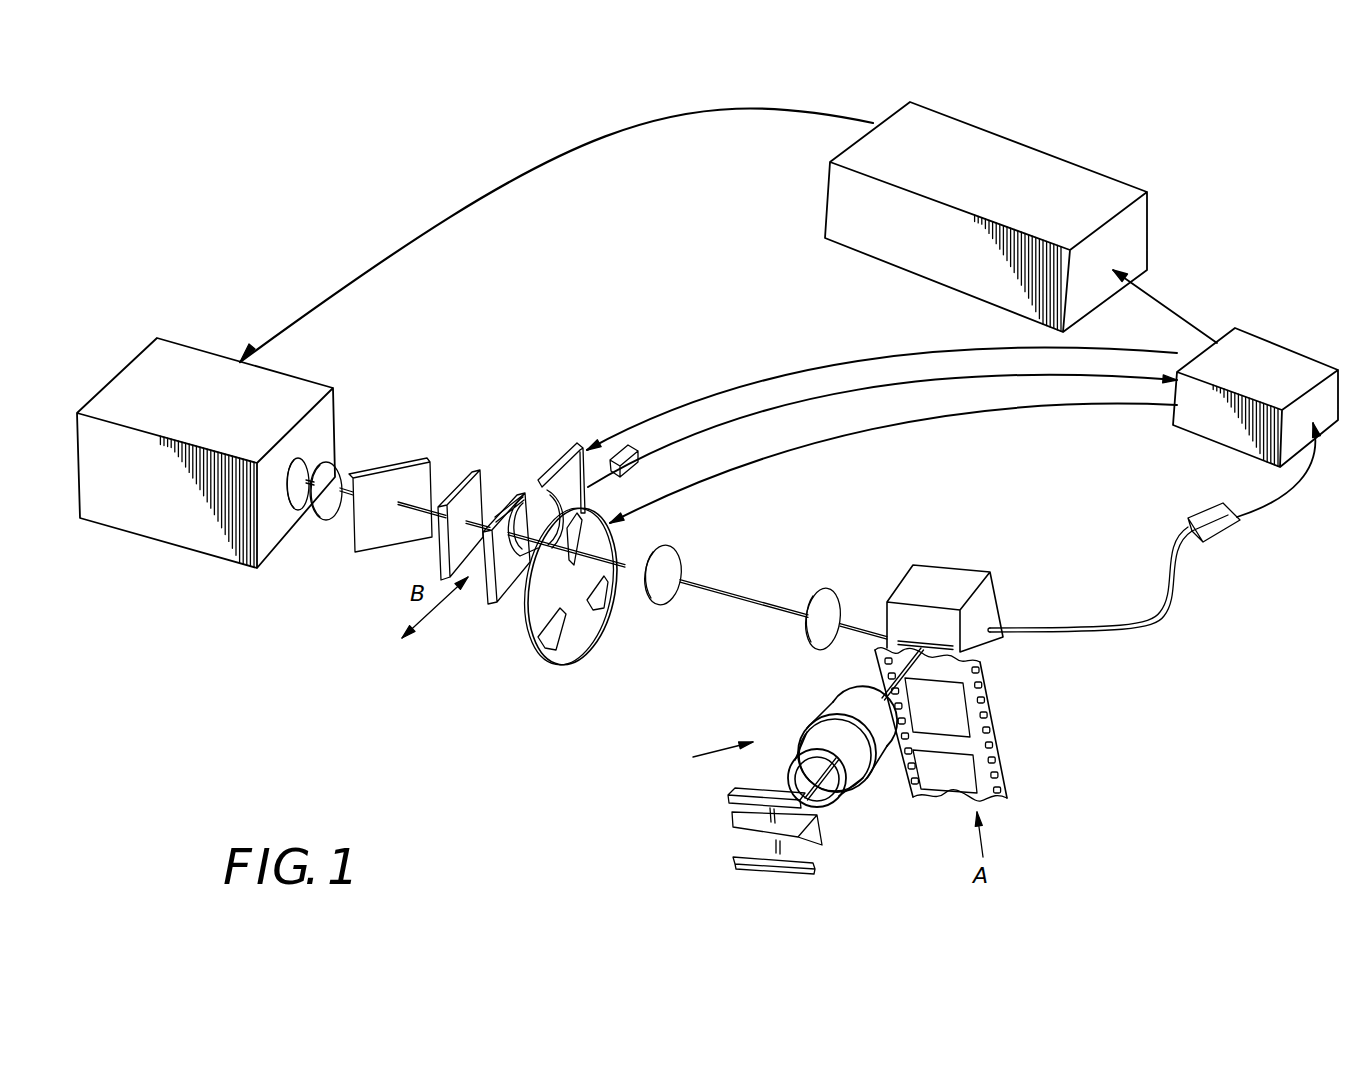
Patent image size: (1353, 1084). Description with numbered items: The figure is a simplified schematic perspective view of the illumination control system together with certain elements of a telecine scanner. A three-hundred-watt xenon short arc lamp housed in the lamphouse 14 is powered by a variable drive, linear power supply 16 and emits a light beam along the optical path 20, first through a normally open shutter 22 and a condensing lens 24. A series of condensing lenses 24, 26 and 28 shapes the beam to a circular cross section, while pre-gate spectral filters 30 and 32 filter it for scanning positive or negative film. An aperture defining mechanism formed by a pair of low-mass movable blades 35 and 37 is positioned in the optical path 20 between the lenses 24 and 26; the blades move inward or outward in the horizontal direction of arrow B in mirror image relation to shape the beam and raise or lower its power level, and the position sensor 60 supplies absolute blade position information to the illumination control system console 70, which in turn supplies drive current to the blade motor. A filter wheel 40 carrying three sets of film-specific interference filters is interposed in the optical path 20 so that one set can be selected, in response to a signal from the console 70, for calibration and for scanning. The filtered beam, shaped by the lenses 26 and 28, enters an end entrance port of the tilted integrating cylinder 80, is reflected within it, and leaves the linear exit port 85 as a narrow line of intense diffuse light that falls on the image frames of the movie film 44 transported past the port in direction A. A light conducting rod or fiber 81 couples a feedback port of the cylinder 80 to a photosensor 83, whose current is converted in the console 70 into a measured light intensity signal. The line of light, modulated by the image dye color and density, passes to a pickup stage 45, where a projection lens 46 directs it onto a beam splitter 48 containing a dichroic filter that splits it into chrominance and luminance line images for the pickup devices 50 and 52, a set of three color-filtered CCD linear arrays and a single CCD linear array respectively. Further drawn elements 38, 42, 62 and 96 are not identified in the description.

The lamphouse 14 is at (165, 343).
The linear power supply 16 is at (832, 198).
The optical path 20 is at (755, 595).
The shutter 22 is at (292, 508).
The condensing lens 24 is at (319, 520).
The condensing lens 26 is at (648, 603).
The condensing lens 28 is at (808, 645).
The pre-gate spectral filter 30 is at (393, 470).
The pre-gate spectral filter 32 is at (485, 480).
The movable blade 35 is at (505, 590).
The movable blade 37 is at (567, 427).
The holder 38 is at (547, 505).
The filter wheel 40 is at (543, 663).
The cable 42 is at (852, 440).
The movie film 44 is at (1001, 745).
The pickup stage 45 is at (704, 757).
The projection lens 46 is at (860, 800).
The beam splitter 48 is at (750, 837).
The pickup device 50 is at (732, 793).
The pickup device 52 is at (793, 868).
The position sensor 60 is at (638, 470).
The cable 62 is at (810, 394).
The illumination control system console 70 is at (1202, 423).
The integrating cylinder 80 is at (942, 573).
The light conducting rod or fiber 81 is at (1165, 586).
The photosensor 83 is at (1220, 530).
The linear exit port 85 is at (886, 618).
The cable 96 is at (903, 352).